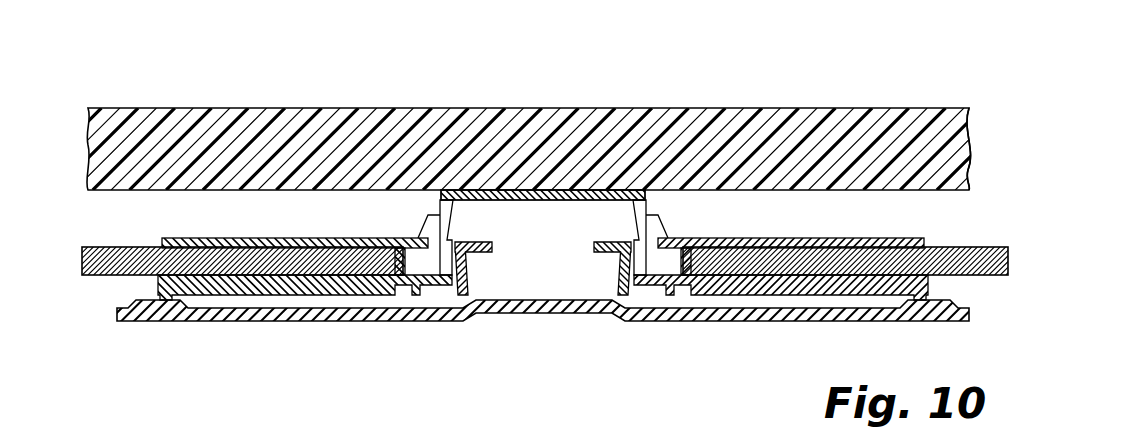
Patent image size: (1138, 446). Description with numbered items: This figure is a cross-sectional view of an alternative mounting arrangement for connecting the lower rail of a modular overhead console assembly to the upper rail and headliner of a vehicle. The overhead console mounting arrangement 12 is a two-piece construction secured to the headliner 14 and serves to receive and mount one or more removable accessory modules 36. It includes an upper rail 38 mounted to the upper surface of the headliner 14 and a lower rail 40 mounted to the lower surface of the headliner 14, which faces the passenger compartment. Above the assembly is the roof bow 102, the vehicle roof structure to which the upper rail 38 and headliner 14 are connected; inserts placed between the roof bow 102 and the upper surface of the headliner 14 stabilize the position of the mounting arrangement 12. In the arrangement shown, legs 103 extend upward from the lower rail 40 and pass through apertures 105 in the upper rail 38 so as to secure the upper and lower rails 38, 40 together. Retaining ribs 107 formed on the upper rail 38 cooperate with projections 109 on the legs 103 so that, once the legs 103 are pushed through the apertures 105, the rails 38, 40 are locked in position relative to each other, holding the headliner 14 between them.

The overhead console mounting arrangement 12 is at (1003, 137).
The headliner 14 is at (1009, 260).
The removable accessory module 36 is at (273, 330).
The upper rail 38 is at (595, 186).
The lower rail 40 is at (609, 274).
The roof bow 102 is at (903, 106).
The leg 103 is at (416, 215).
The aperture 105 is at (503, 190).
The retaining rib 107 is at (444, 208).
The projection 109 is at (668, 220).